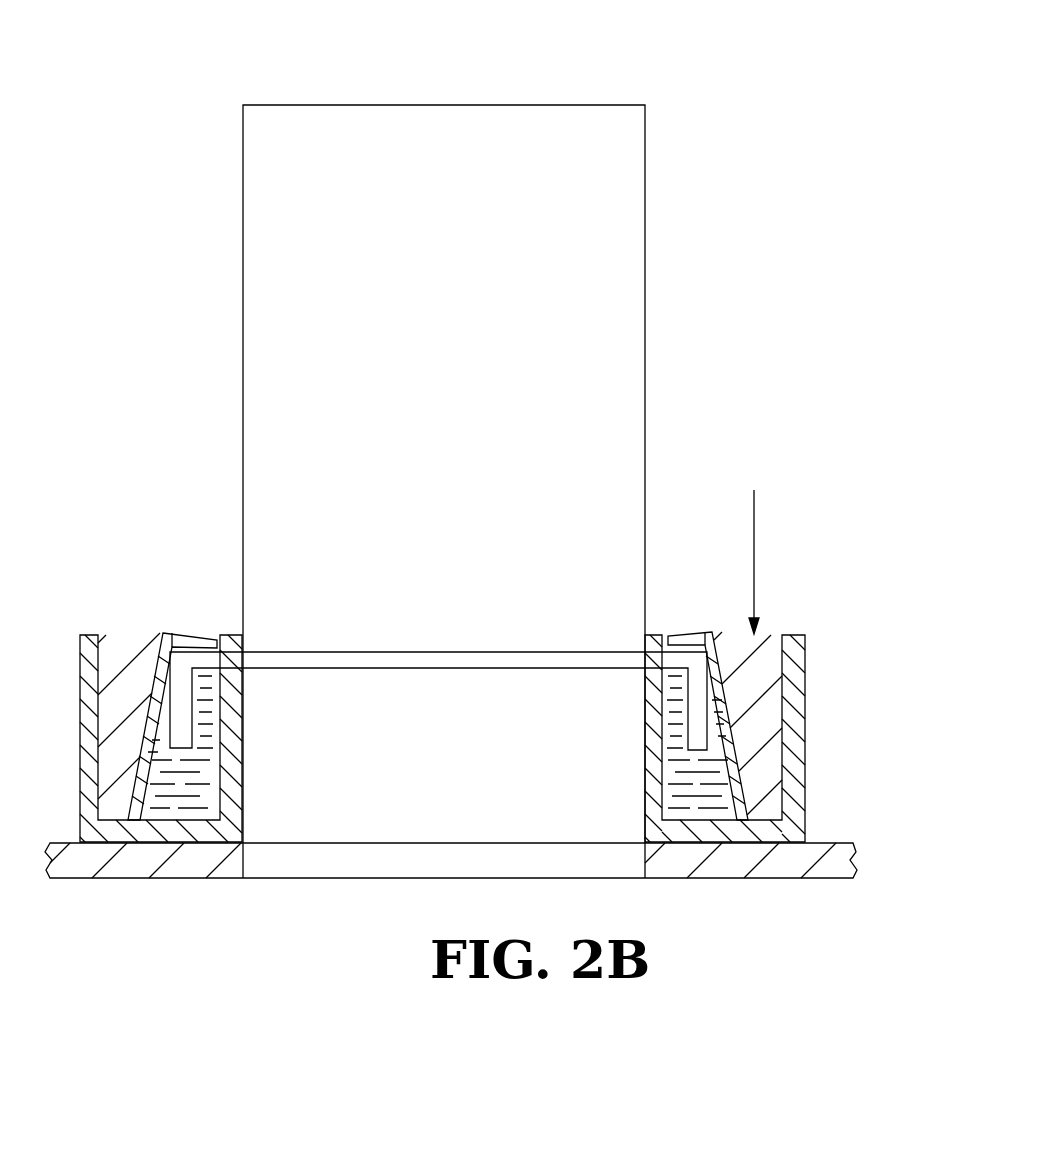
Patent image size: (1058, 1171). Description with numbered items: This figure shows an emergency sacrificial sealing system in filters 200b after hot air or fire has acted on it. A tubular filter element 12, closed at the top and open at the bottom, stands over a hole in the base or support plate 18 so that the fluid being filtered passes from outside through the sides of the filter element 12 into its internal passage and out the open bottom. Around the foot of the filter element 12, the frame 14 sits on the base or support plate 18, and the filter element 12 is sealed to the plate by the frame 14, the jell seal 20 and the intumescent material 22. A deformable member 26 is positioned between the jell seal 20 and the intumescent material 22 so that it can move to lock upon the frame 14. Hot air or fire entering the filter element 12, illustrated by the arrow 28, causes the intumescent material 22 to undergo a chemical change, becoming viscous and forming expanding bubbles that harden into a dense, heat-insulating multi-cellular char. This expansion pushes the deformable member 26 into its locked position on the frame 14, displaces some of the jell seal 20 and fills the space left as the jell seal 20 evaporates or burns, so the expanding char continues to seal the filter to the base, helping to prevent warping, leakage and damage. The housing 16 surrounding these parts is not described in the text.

The emergency sacrificial sealing system in filters 200b is at (612, 65).
The tubular filter element 12 is at (430, 152).
The frame 14 is at (285, 652).
The housing 16 is at (805, 755).
The base or support plate 18 is at (176, 878).
The jell seal 20 is at (678, 785).
The intumescent material 22 is at (765, 645).
The deformable member 26 is at (690, 630).
The arrow 28 is at (754, 548).